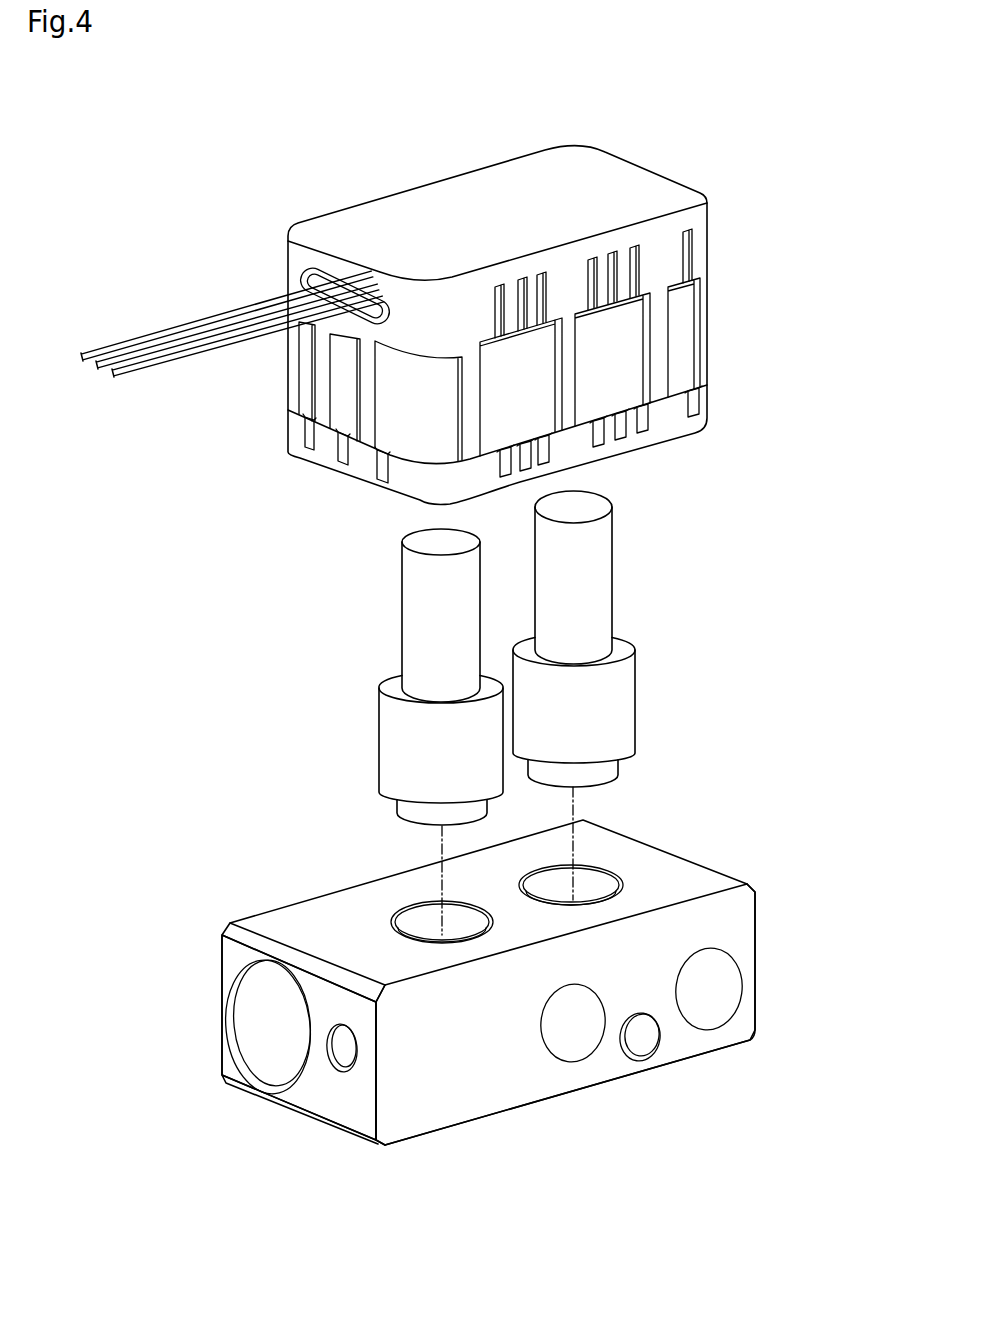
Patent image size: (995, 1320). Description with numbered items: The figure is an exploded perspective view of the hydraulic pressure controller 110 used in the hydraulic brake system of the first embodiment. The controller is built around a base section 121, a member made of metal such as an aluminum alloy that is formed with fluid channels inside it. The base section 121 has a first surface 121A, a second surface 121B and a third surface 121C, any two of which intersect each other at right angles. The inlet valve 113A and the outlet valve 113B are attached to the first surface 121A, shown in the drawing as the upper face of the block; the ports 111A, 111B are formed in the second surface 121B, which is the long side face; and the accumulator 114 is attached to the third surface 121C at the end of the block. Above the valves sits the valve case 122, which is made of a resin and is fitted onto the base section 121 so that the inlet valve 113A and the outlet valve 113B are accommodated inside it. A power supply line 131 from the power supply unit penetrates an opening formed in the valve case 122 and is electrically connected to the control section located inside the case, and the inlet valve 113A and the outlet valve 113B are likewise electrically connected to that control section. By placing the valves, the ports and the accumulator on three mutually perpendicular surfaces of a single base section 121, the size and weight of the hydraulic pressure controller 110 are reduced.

The hydraulic pressure controller 110 is at (773, 106).
The valve case 122 is at (440, 203).
The power supply line 131 is at (202, 322).
The inlet valve 113A is at (597, 571).
The outlet valve 113B is at (408, 597).
The base section 121 is at (782, 943).
The first surface 121A is at (270, 927).
The second surface 121B is at (732, 902).
The third surface 121C is at (350, 1107).
The accumulator 114 is at (270, 1067).
The port 111A is at (717, 1025).
The port 111B is at (575, 1067).